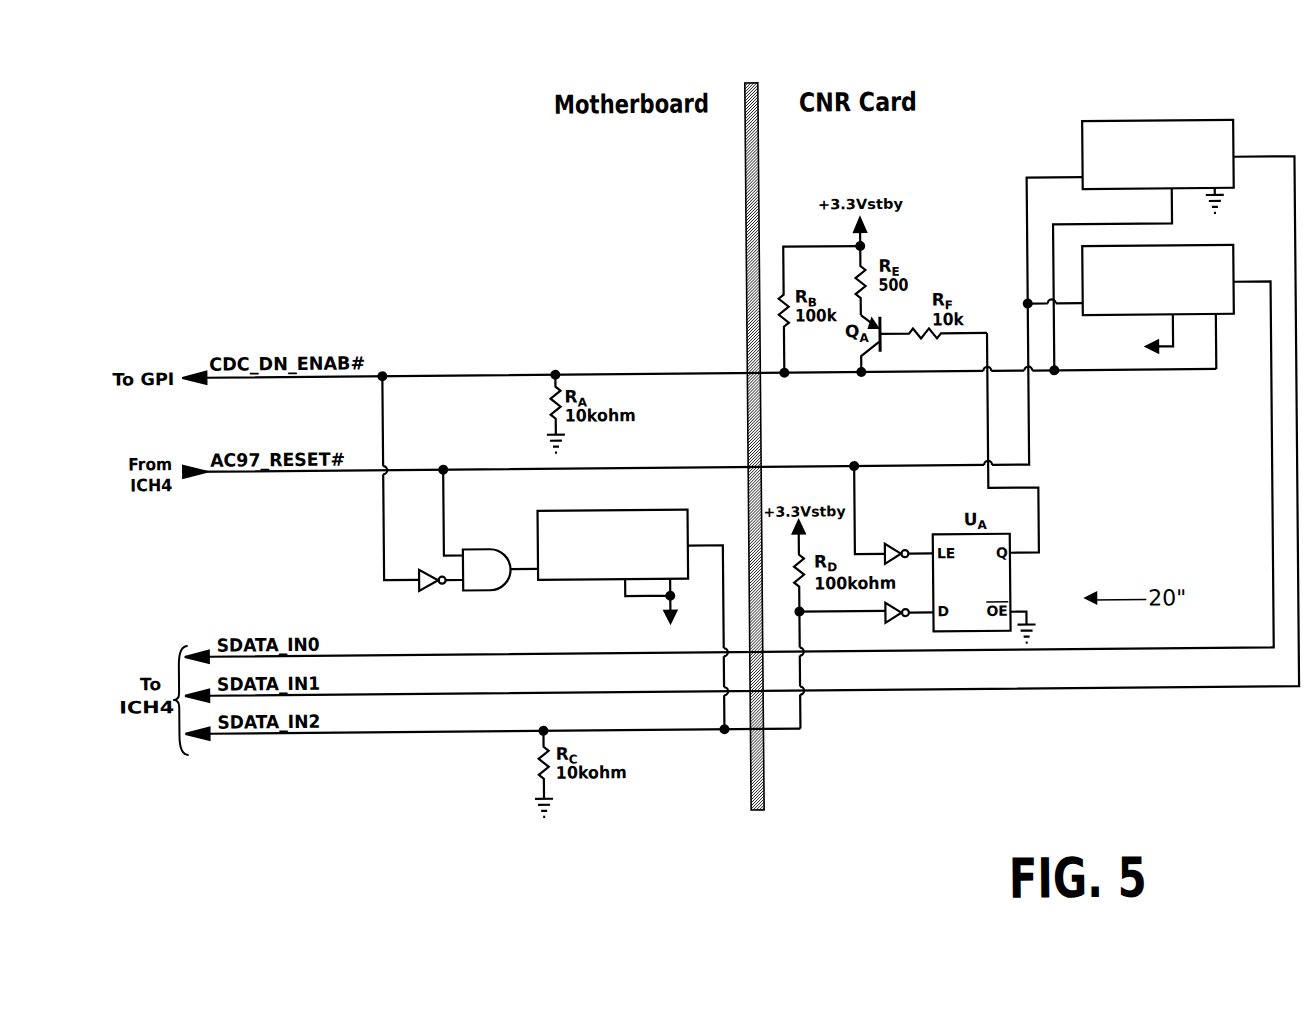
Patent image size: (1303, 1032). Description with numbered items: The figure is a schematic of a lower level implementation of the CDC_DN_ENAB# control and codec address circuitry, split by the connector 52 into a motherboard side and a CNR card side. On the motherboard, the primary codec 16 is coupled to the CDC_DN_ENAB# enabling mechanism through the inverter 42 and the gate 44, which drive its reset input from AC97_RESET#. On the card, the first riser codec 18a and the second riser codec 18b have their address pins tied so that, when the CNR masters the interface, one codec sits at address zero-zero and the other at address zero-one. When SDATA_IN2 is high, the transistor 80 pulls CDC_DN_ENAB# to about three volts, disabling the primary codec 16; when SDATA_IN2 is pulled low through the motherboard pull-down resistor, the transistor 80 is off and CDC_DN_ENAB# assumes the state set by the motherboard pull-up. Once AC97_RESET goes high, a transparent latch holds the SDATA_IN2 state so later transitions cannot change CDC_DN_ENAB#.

The primary codec 16 is at (640, 509).
The first riser codec 18a is at (1228, 320).
The second riser codec 18b is at (1172, 124).
The inverter 42 is at (422, 591).
The gate 44 is at (504, 546).
The connector 52 is at (768, 790).
The transistor 80 is at (884, 330).